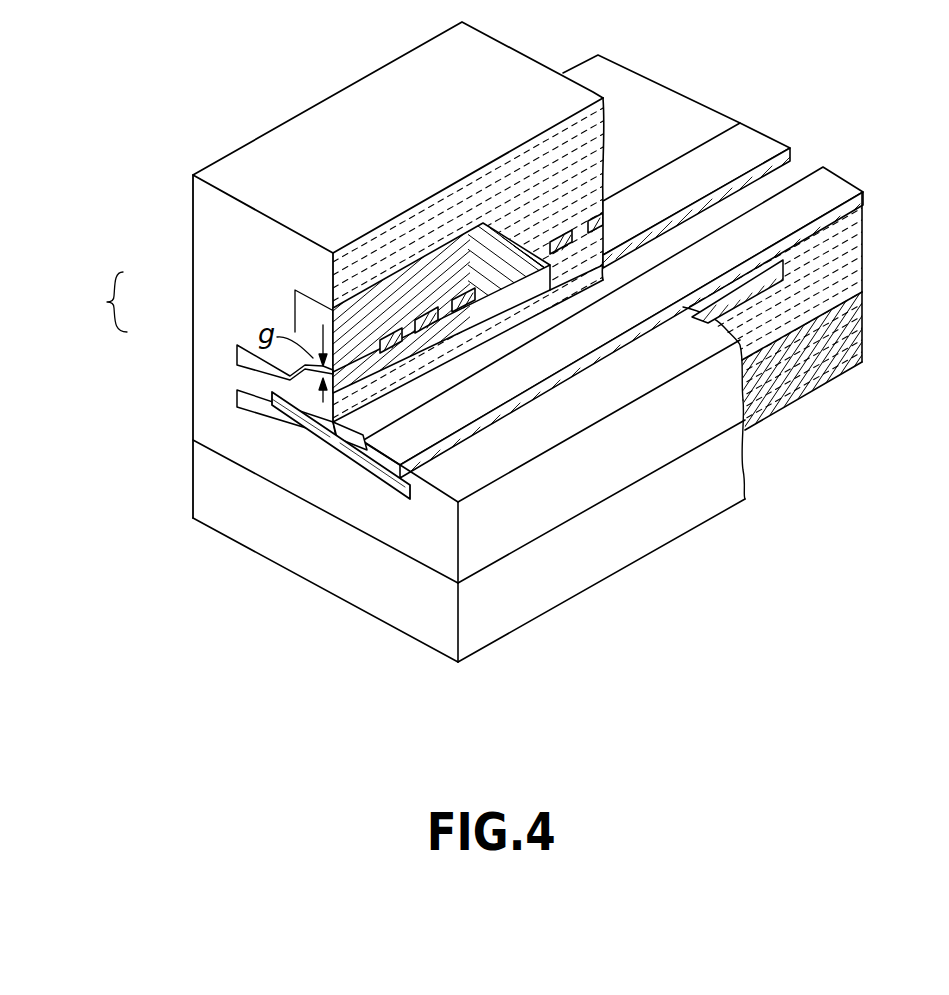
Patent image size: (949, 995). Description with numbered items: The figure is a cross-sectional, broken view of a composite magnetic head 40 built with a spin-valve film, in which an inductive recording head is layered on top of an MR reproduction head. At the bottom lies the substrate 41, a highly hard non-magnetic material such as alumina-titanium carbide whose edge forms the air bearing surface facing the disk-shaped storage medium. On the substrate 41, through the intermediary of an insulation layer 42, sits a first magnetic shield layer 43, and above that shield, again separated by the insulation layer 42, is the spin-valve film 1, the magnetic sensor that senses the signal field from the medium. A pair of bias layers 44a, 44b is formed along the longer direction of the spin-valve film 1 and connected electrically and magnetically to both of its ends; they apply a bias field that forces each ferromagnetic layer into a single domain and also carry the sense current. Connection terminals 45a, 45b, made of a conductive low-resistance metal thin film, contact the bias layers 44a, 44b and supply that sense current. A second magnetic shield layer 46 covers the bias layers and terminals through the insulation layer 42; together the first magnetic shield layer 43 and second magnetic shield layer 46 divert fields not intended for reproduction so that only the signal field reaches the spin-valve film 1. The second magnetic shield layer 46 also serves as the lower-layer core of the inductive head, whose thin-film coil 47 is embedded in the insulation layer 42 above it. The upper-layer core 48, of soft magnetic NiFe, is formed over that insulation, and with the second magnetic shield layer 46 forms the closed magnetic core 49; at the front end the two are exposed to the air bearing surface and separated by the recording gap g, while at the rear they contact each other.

The spin-valve film 1 is at (343, 433).
The composite magnetic head 40 is at (223, 140).
The substrate 41 is at (843, 367).
The insulation layer 42 is at (600, 137).
The first magnetic shield layer 43 is at (240, 400).
The bias layer 44a is at (295, 407).
The bias layer 44b is at (390, 442).
The connection terminal 45a is at (752, 138).
The connection terminal 45b is at (838, 187).
The second magnetic shield layer 46 is at (237, 347).
The thin-film coil 47 is at (391, 335).
The upper-layer core 48 is at (307, 305).
The magnetic core 49 is at (101, 302).